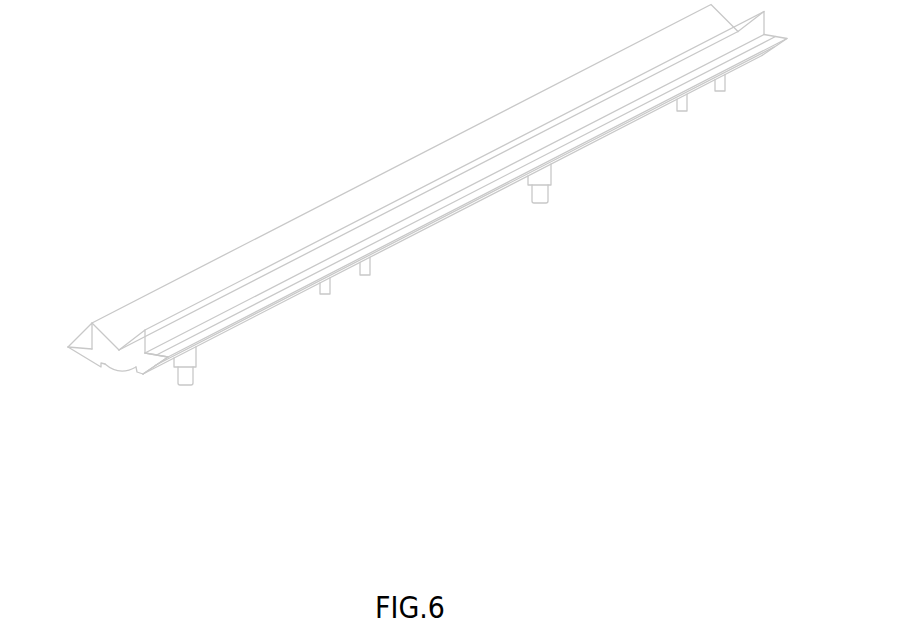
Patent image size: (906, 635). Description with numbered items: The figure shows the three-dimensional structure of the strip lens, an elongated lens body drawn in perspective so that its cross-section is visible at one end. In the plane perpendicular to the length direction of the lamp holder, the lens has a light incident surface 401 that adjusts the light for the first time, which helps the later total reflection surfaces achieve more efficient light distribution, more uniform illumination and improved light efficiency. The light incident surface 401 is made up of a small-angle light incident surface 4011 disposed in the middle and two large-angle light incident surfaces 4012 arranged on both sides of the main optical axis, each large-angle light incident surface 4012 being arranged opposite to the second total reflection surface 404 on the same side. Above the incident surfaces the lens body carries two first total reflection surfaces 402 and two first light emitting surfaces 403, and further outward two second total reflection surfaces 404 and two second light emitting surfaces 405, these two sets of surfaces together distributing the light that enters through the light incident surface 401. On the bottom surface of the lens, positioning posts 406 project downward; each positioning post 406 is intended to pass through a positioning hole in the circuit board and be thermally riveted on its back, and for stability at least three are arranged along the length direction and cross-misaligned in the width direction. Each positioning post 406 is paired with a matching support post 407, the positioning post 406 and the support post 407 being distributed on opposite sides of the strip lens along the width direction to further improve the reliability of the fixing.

The light incident surface 401 is at (192, 478).
The small-angle light incident surface 4011 is at (126, 370).
The large-angle light incident surface 4012 is at (103, 369).
The first total reflection surface 402 is at (122, 327).
The first light emitting surface 403 is at (168, 330).
The second total reflection surface 404 is at (220, 332).
The second light emitting surface 405 is at (265, 300).
The positioning post 406 is at (548, 185).
The support post 407 is at (370, 277).